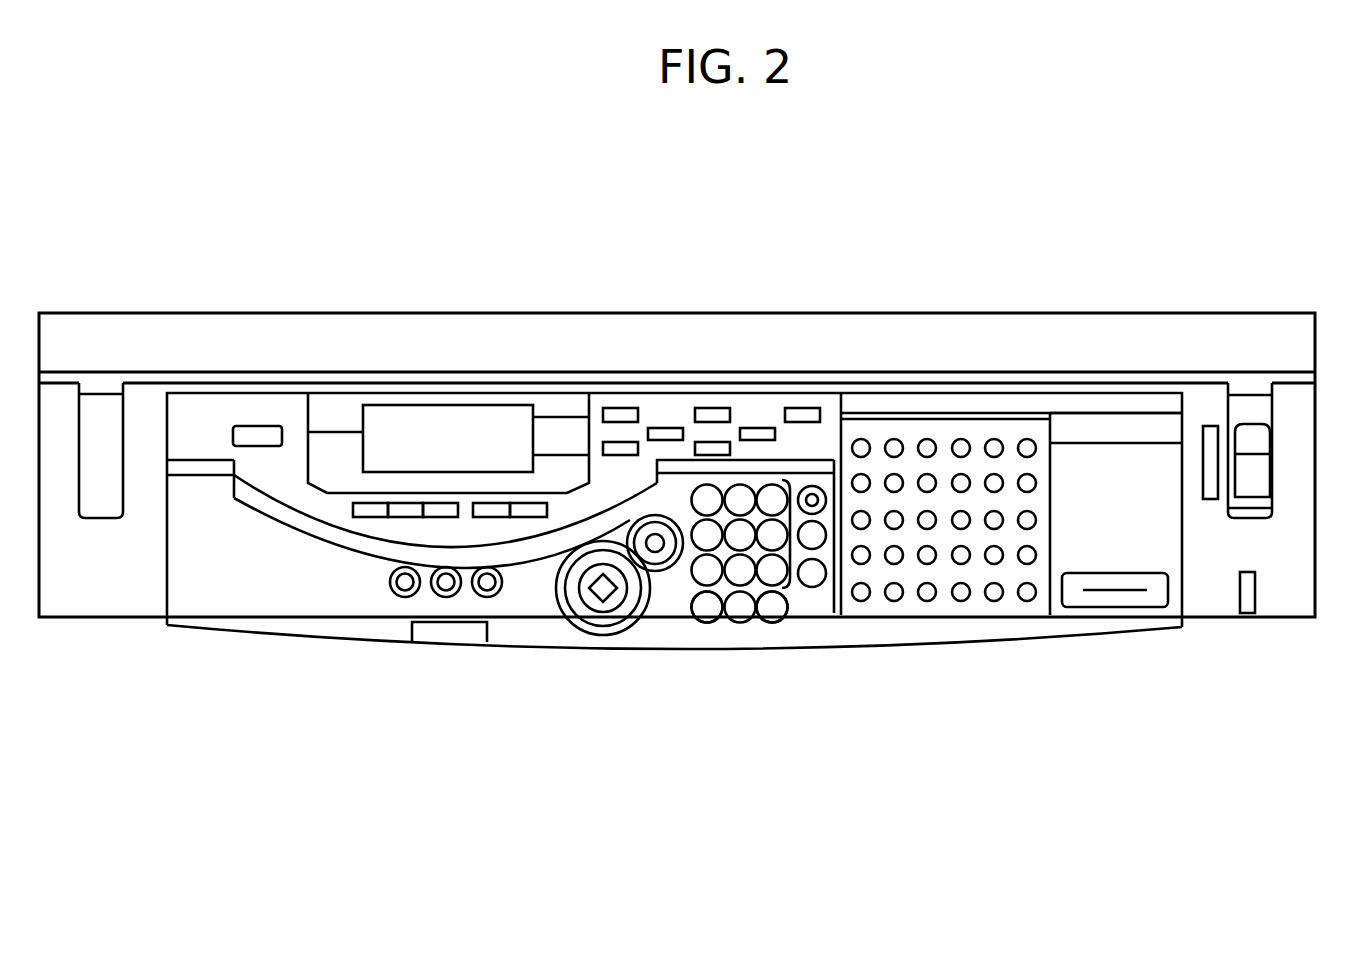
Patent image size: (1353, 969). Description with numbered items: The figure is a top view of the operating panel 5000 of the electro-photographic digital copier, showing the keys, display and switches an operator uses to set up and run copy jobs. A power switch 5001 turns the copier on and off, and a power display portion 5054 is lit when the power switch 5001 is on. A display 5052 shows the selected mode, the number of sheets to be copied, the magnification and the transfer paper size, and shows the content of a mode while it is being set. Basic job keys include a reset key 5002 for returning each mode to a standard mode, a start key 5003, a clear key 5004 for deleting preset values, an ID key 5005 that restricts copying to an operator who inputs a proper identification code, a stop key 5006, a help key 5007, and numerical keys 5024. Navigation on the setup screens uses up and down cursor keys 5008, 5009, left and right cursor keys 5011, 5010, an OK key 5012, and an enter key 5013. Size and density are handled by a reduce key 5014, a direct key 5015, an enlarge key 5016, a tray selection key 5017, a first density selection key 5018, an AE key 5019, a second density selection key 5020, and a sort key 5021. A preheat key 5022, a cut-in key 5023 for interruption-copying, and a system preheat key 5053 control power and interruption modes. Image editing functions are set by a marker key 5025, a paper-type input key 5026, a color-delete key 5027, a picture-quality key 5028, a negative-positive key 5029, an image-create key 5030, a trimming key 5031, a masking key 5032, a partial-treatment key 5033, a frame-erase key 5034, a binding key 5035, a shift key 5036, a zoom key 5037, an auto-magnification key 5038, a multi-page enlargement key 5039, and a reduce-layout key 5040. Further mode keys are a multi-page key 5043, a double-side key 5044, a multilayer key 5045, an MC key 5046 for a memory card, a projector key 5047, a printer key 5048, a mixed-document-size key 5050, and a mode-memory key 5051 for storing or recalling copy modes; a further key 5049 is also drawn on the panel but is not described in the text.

The operating panel 5000 is at (1257, 306).
The power switch 5001 is at (1252, 520).
The reset key 5002 is at (528, 518).
The start key 5003 is at (612, 603).
The clear key 5004 is at (698, 620).
The ID key 5005 is at (764, 617).
The stop key 5006 is at (667, 568).
The help key 5007 is at (786, 412).
The up cursor key 5008 is at (708, 408).
The down cursor key 5009 is at (696, 443).
The right cursor key 5010 is at (760, 428).
The left cursor key 5011 is at (658, 430).
The OK key 5012 is at (607, 408).
The enter key 5013 is at (603, 448).
The reduce key 5014 is at (372, 503).
The direct key 5015 is at (410, 503).
The enlarge key 5016 is at (443, 503).
The tray selection key 5017 is at (497, 518).
The first density selection key 5018 is at (398, 596).
The AE key 5019 is at (446, 596).
The second density selection key 5020 is at (487, 596).
The sort key 5021 is at (233, 435).
The preheat key 5022 is at (813, 486).
The cut-in key 5023 is at (805, 549).
The numerical keys 5024 is at (813, 588).
The marker key 5025 is at (860, 439).
The paper-type input key 5026 is at (894, 474).
The color-delete key 5027 is at (928, 474).
The picture-quality key 5028 is at (995, 440).
The negative-positive key 5029 is at (1003, 482).
The image-create key 5030 is at (1105, 413).
The trimming key 5031 is at (855, 480).
The masking key 5032 is at (926, 439).
The partial-treatment key 5033 is at (963, 440).
The frame-erase key 5034 is at (1035, 447).
The binding key 5035 is at (969, 482).
The shift key 5036 is at (1036, 483).
The zoom key 5037 is at (856, 529).
The auto-magnification key 5038 is at (893, 439).
The multi-page enlargement key 5039 is at (935, 515).
The reduce-layout key 5040 is at (1128, 607).
The multi-page key 5043 is at (862, 601).
The double-side key 5044 is at (895, 563).
The multilayer key 5045 is at (933, 563).
The MC key 5046 is at (965, 563).
The projector key 5047 is at (1001, 562).
The printer key 5048 is at (1034, 561).
The key 5049 is at (857, 563).
The mixed-document-size key 5050 is at (928, 601).
The mode-memory key 5051 is at (894, 600).
The display 5052 is at (478, 405).
The system preheat key 5053 is at (783, 590).
The power display portion 5054 is at (1247, 613).